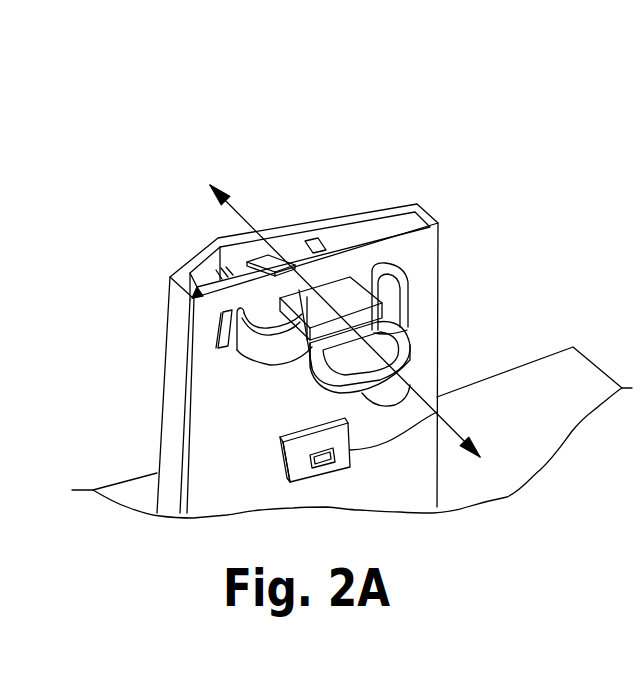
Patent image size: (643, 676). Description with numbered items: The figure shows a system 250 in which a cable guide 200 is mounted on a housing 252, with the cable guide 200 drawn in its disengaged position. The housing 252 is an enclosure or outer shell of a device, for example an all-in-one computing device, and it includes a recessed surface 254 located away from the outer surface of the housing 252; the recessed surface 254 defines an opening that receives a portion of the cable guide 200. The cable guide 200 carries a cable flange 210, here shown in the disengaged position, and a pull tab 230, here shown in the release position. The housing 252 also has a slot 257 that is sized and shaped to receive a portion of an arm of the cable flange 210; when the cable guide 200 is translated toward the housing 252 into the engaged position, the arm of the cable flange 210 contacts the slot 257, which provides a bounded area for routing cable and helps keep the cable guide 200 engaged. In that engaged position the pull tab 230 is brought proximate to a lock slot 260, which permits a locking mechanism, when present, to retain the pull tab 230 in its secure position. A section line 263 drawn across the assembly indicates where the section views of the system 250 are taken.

The cable guide 200 is at (210, 362).
The cable flange 210 is at (410, 298).
The pull tab 230 is at (411, 331).
The system 250 is at (313, 257).
The housing 252 is at (200, 237).
The recessed surface 254 is at (302, 247).
The slot 257 is at (373, 262).
The lock slot 260 is at (440, 412).
The section line 263 is at (345, 311).